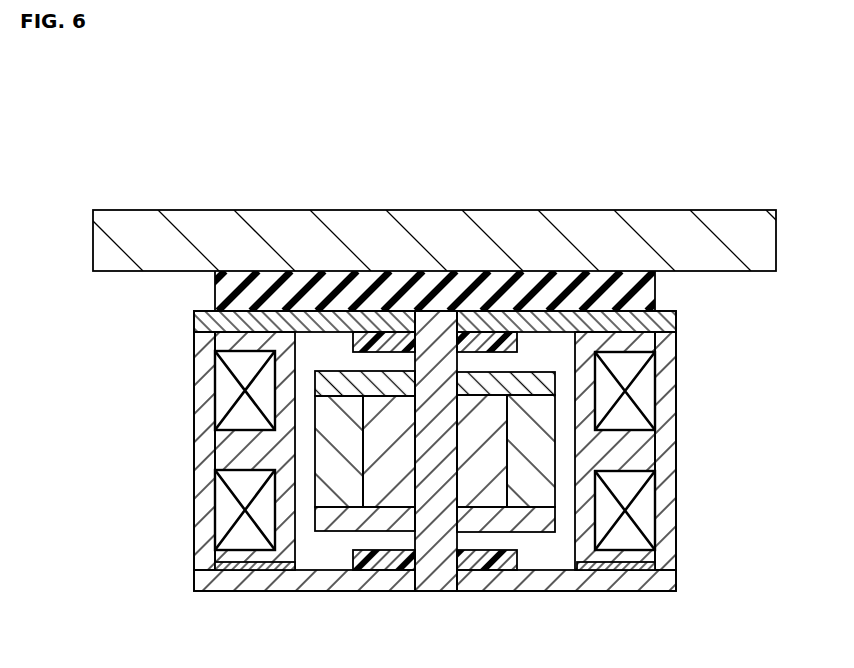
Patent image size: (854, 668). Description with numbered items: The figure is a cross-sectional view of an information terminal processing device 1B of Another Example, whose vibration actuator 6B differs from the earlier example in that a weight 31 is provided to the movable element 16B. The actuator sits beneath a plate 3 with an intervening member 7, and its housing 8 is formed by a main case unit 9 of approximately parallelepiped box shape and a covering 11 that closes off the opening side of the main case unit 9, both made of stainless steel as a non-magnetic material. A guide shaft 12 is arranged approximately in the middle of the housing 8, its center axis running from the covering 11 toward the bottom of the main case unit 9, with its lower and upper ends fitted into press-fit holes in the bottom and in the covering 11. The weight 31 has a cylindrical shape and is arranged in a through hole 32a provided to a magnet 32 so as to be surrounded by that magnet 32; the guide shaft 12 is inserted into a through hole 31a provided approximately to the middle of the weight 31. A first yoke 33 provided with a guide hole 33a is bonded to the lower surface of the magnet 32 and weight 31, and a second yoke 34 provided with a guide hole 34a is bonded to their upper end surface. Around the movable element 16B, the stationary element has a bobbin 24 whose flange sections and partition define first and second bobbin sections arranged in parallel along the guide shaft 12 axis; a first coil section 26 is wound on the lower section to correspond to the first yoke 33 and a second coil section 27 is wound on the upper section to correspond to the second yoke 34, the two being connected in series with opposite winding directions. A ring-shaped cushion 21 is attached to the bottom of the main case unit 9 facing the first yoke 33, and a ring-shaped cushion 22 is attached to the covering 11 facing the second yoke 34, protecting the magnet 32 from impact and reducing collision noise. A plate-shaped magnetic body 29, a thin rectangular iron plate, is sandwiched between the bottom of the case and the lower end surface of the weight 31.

The information terminal processing device 1B is at (760, 130).
The movable plate 3 is at (602, 233).
The vibration actuator 6B is at (768, 335).
The elastic member 7 is at (222, 292).
The housing 8 is at (486, 425).
The main case unit 9 is at (668, 416).
The covering 11 is at (678, 320).
The guide shaft 12 is at (438, 586).
The movable element 16B is at (335, 370).
The cushion 21 is at (495, 563).
The cushion 22 is at (496, 343).
The bobbin 24 is at (637, 448).
The first coil section 26 is at (640, 518).
The second coil section 27 is at (640, 378).
The plate-shaped magnetic body 29 is at (622, 567).
The weight 31 is at (483, 463).
The through hole 31a is at (454, 445).
The magnet 32 is at (335, 443).
The through hole 32a is at (368, 466).
The first yoke 33 is at (517, 487).
The guide hole 33a is at (432, 519).
The second yoke 34 is at (536, 380).
The guide hole 34a is at (416, 384).